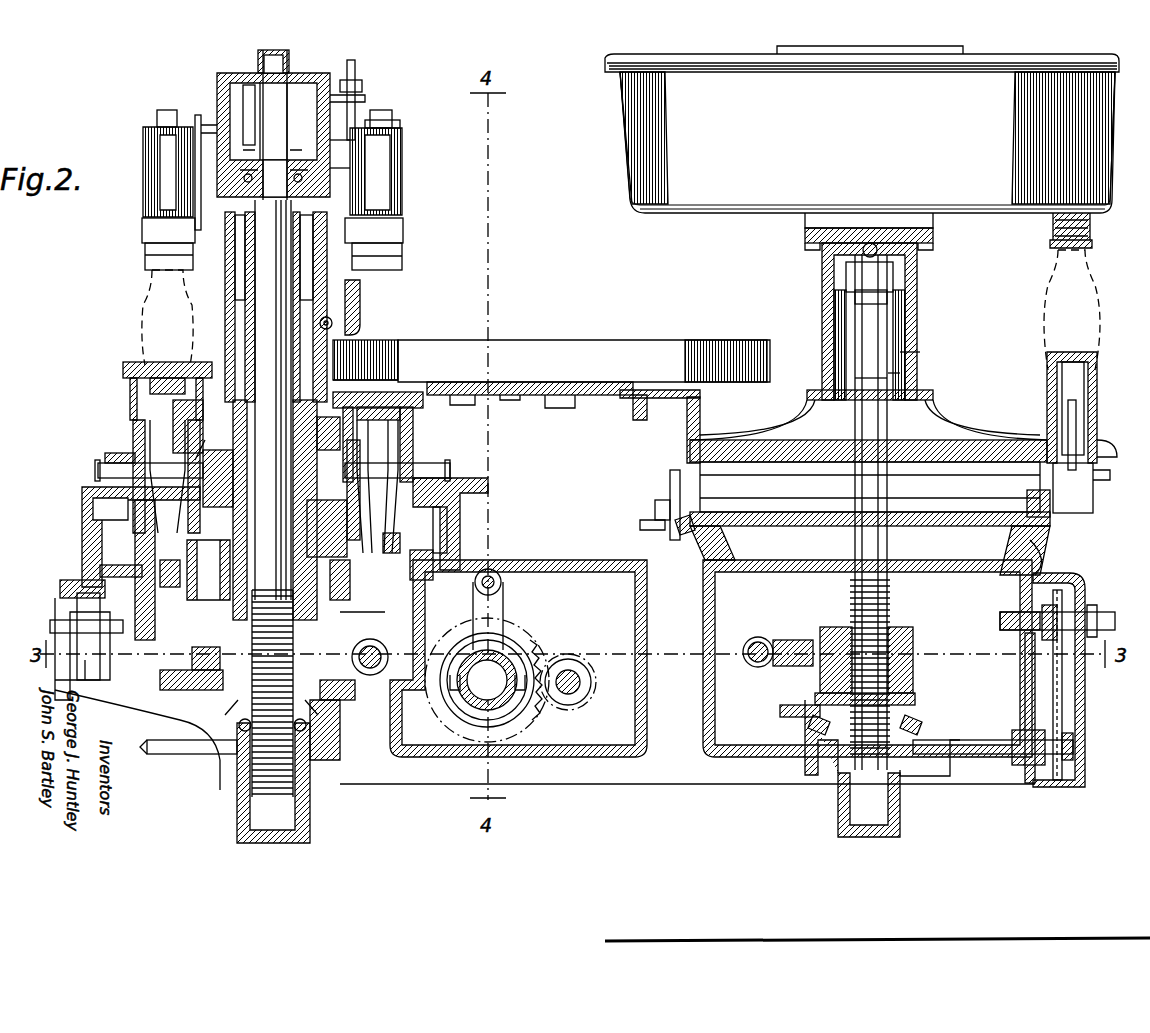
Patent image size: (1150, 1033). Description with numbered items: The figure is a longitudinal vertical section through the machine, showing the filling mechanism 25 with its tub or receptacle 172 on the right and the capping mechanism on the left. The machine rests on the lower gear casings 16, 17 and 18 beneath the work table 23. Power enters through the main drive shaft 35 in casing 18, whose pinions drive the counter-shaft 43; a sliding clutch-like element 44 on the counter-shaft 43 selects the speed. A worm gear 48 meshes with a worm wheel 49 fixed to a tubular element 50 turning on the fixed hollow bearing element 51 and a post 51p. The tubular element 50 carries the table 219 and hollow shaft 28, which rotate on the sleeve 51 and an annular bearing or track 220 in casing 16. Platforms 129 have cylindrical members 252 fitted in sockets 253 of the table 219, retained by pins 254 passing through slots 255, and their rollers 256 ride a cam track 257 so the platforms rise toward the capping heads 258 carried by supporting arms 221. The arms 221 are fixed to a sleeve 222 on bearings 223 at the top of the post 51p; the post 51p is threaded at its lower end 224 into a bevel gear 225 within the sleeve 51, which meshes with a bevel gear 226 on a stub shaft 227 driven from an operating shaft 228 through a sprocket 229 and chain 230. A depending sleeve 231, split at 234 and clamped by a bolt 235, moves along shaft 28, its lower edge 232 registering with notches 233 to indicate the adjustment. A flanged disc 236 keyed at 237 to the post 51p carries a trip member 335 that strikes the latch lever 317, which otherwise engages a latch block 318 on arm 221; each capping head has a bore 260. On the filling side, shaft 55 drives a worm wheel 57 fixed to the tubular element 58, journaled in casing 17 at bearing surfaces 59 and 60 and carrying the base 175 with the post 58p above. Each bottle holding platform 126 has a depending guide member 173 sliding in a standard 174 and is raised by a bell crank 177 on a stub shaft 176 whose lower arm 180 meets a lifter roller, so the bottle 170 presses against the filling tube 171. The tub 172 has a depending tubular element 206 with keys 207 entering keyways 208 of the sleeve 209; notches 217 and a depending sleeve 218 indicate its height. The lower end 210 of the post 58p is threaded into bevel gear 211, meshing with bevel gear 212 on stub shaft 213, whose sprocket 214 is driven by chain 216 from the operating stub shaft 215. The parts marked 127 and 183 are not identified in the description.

The filling mechanism 25 is at (862, 129).
The filling tub or receptacle 172 is at (712, 190).
The central depending tubular element 206 is at (836, 272).
The depending sleeve 218 is at (822, 297).
The keys 207 is at (905, 318).
The position indicating notches 217 is at (925, 340).
The keyways 208 is at (900, 353).
The upstanding sleeve 209 is at (890, 375).
The post 58p is at (872, 380).
The lower end of post 210 is at (848, 755).
The base 175 is at (955, 437).
The stub shaft 176 is at (722, 502).
The bell crank lever device 177 is at (1082, 505).
The bearing surface 60 is at (1055, 555).
The bottle holding platform 126 is at (702, 425).
The depending cylindrical guide member 173 is at (1060, 375).
The cylindrical standard 174 is at (1066, 398).
The filling valve or tube 171 is at (1070, 233).
The bottle 170 is at (1075, 278).
The lower arm of bell crank 180 is at (668, 522).
The pawl 183 is at (686, 537).
The work table 23 is at (540, 390).
The brush block 127 is at (652, 358).
The lower edge of sleeve 232 is at (320, 352).
The notches 233 is at (320, 378).
The platforms 129 is at (123, 373).
The flanged disc 236 is at (306, 73).
The key 237 is at (245, 118).
The capping head supporting arms 221 is at (208, 125).
The post 51p is at (272, 293).
The fixed hollow bearing element 51 is at (308, 540).
The tubular element 50 is at (222, 585).
The worm wheel 49 is at (197, 660).
The threaded lower end of post 224 is at (245, 800).
The second bevel gear 226 is at (245, 735).
The bevel gear 225 is at (338, 768).
The horizontal stub shaft 227 is at (160, 752).
The rollers 256 is at (105, 535).
The lower gear casing 16 is at (105, 568).
The operating shaft 228 is at (58, 612).
The sprocket 229 is at (88, 650).
The sprocket chain 230 is at (90, 676).
The cylindrical members 252 is at (130, 404).
The sockets 253 is at (133, 435).
The pins 254 is at (95, 468).
The slots 255 is at (190, 445).
The hollow shaft 28 is at (225, 355).
The capping heads 258 is at (142, 240).
The bore 260 is at (160, 193).
The depending sleeve 231 is at (325, 262).
The sleeve 222 is at (325, 150).
The bearings 223 is at (330, 172).
The pivoted latch lever 317 is at (356, 120).
The trip member 335 is at (360, 90).
The latch block 318 is at (378, 122).
The bolt 235 is at (335, 320).
The split 234 is at (340, 332).
The table portion 219 is at (455, 480).
The annular bearing or track 220 is at (462, 530).
The cam track 257 is at (385, 612).
The intermediate gear casing 18 is at (550, 562).
The worm gear 48 is at (388, 657).
The counter-shaft 43 is at (512, 657).
The clutch-like element 44 is at (522, 700).
The main drive shaft 35 is at (582, 670).
The tubular element 58 is at (955, 602).
The filling mechanism drive shaft 55 is at (758, 638).
The worm wheel 57 is at (838, 630).
The bearing surface 59 is at (785, 705).
The bevel gear 211 is at (810, 728).
The bevel gear 212 is at (918, 775).
The stub shaft 213 is at (1005, 755).
The sprocket 214 is at (1057, 782).
The upper operating stub shaft 215 is at (1025, 630).
The sprocket chain 216 is at (1030, 700).
The lower gear casing 17 is at (1060, 578).